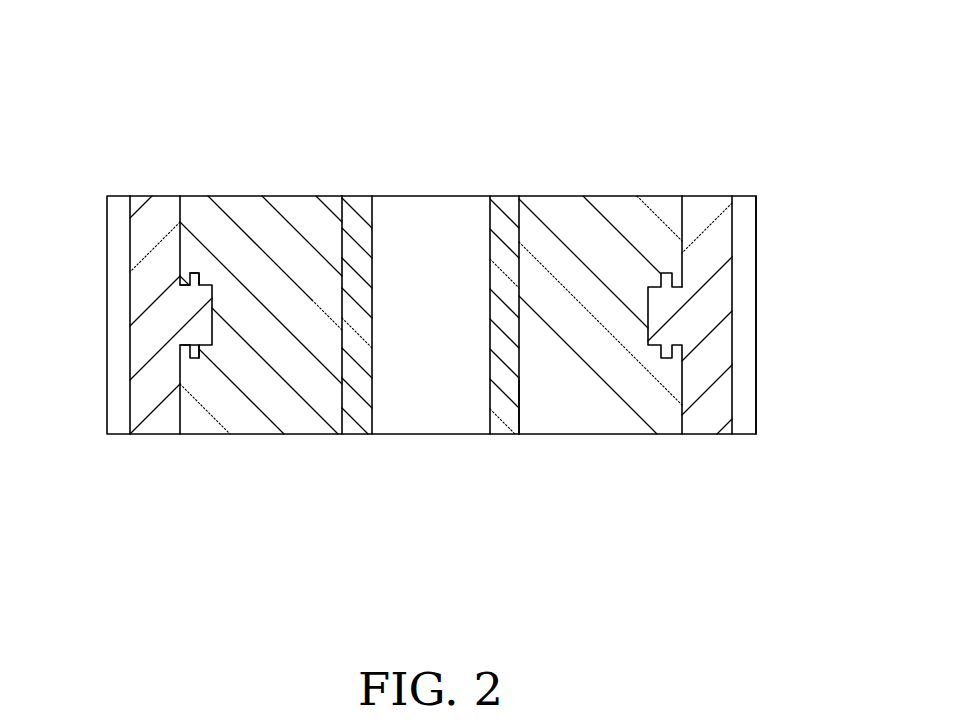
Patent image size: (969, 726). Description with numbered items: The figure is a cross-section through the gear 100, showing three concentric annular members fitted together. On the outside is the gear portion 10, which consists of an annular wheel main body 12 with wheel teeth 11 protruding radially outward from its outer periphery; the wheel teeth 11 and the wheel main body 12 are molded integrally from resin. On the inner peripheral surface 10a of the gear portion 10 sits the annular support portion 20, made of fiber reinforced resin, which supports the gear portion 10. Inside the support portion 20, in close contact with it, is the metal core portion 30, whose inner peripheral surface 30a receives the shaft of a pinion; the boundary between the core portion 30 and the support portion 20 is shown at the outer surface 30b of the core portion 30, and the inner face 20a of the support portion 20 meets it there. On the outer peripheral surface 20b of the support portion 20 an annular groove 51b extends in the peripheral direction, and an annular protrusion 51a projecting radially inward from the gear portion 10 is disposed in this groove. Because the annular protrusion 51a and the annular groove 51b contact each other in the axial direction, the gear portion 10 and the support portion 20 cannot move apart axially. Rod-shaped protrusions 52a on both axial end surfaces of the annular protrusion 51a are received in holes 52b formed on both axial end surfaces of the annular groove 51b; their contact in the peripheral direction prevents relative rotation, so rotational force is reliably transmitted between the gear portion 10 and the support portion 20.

The gear 100 is at (787, 138).
The gear portion 10 is at (707, 393).
The inner peripheral surface of the gear portion 10a is at (682, 415).
The wheel teeth 11 is at (743, 398).
The wheel main body 12 is at (712, 398).
The support portion 20 is at (600, 291).
The first side surface of first member 20a is at (519, 413).
The outer peripheral surface of the support portion 20b is at (682, 233).
The core portion 30 is at (502, 242).
The inner peripheral surface of the core portion 30a is at (490, 222).
The second surface of bonding layer 30b is at (519, 220).
The annular protrusion 51a is at (214, 306).
The annular groove 51b is at (201, 275).
The rod-shaped protrusions 52a is at (198, 278).
The holes 52b is at (199, 285).